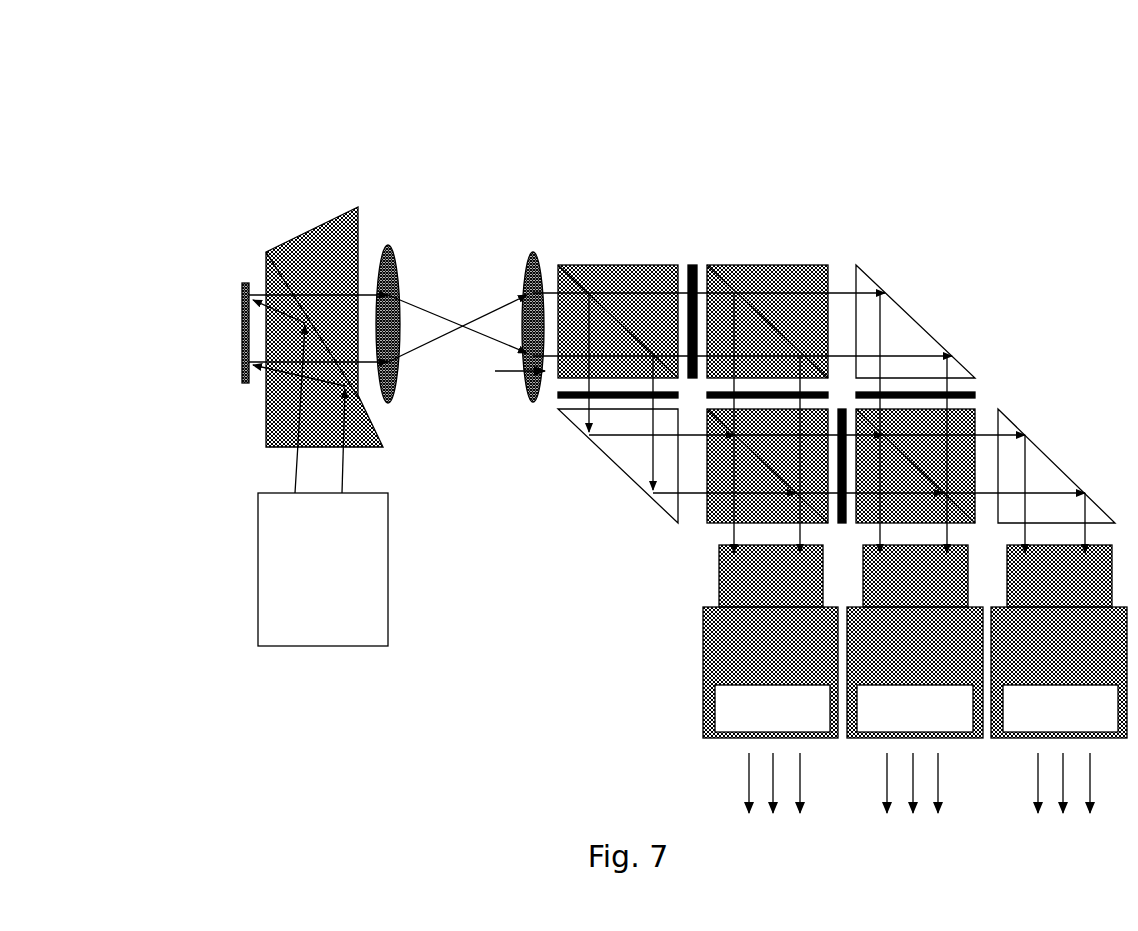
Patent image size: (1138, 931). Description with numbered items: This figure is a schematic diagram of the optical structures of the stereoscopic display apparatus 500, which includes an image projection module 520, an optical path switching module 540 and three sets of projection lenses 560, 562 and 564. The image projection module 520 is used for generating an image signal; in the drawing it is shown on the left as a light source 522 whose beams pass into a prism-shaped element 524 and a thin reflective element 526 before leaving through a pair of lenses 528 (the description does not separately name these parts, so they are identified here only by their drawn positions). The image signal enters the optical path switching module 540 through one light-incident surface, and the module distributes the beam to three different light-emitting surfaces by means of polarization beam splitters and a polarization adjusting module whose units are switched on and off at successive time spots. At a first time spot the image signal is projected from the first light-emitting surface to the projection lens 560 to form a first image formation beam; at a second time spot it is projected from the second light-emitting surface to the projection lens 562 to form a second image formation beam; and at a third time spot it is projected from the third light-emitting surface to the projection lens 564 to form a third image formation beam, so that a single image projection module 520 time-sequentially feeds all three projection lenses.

The stereoscopic display apparatus 500 is at (600, 156).
The image projection module 520 is at (298, 198).
The light source 522 is at (345, 646).
The prism 524 is at (266, 417).
The light modulator 526 is at (240, 339).
The relay lens pair 528 is at (552, 239).
The optical path switching module 540 is at (794, 236).
The projection lens 560 is at (1059, 679).
The projection lens 562 is at (915, 679).
The projection lens 564 is at (770, 679).